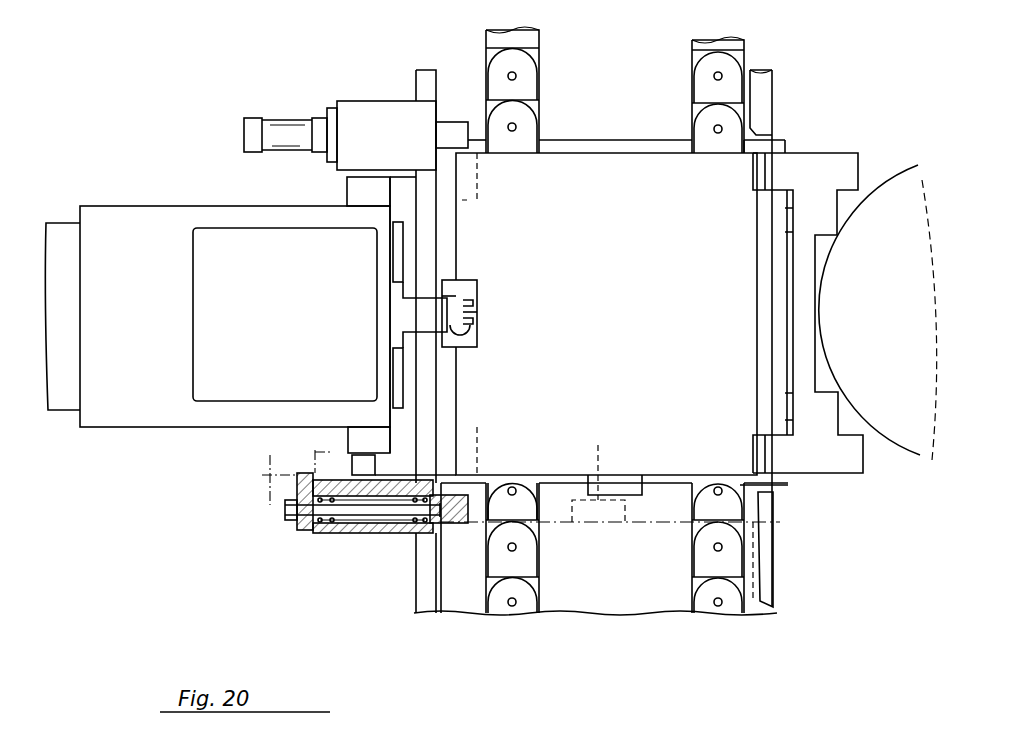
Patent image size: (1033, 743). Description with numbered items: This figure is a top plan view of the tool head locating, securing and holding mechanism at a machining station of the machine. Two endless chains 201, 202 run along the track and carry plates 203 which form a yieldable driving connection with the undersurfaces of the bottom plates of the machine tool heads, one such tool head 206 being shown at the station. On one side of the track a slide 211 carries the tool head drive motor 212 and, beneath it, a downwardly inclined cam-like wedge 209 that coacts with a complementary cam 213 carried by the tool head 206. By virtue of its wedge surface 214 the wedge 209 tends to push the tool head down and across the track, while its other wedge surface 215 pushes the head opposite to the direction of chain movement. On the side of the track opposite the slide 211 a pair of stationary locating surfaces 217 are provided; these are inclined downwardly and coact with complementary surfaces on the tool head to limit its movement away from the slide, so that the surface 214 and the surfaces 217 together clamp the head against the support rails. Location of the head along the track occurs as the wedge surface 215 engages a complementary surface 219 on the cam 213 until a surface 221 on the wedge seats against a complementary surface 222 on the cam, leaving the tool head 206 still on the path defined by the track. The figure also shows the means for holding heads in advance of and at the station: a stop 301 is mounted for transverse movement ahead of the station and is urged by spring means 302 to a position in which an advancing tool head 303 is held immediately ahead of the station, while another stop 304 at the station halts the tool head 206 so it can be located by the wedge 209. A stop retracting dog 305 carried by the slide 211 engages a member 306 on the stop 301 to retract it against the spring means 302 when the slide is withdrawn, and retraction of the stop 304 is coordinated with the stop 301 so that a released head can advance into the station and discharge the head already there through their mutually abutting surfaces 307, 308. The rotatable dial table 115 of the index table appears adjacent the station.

The rotatable dial table 115 is at (900, 158).
The endless chain 201 is at (502, 628).
The endless chain 202 is at (721, 628).
The plates 203 is at (530, 566).
The tool head 206 is at (635, 172).
The cam-like wedge 209 is at (430, 312).
The slide 211 is at (107, 218).
The tool head drive motor 212 is at (232, 245).
The complementary cam 213 is at (472, 285).
The wedge surface 214 is at (472, 313).
The wedge surface 215 is at (477, 345).
The stationary locating surfaces 217 is at (764, 158).
The complementary surface 219 is at (473, 318).
The surface 221 is at (454, 284).
The complementary surface 222 is at (465, 308).
The stop 301 is at (460, 521).
The spring means 302 is at (332, 521).
The advancing tool head 303 is at (655, 598).
The stop 304 is at (447, 125).
The stop retracting dog 305 is at (355, 462).
The member 306 is at (300, 488).
The abutting surface 307 is at (598, 445).
The abutting surface 308 is at (637, 502).